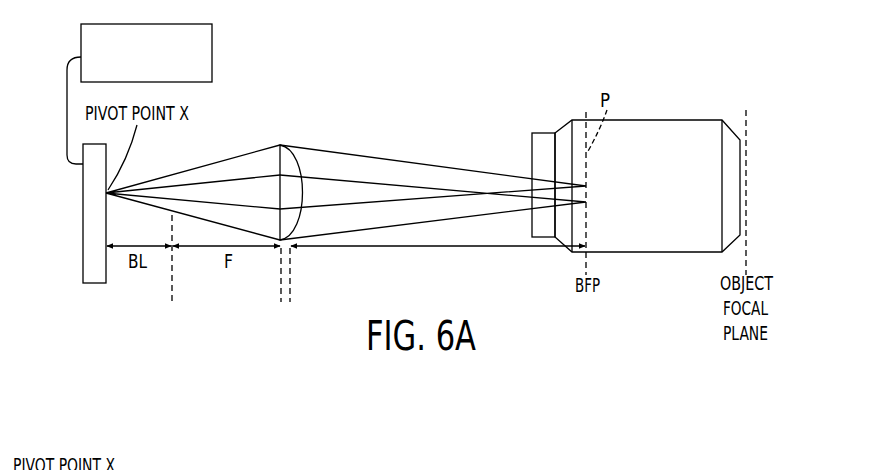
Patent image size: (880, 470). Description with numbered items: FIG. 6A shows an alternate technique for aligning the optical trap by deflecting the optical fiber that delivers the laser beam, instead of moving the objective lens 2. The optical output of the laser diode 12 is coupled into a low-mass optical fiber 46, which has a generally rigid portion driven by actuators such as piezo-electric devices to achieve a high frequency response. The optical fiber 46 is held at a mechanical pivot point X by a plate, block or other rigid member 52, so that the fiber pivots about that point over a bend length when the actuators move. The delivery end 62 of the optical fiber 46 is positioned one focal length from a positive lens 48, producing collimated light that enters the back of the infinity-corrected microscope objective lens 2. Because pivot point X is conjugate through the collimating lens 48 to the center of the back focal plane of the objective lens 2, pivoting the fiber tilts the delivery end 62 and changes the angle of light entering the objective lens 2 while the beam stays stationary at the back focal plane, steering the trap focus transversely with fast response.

The laser diode 12 is at (213, 46).
The optical fiber 46 is at (60, 128).
The rigid member 52 is at (87, 273).
The delivery end 62 is at (177, 175).
The positive lens 48 is at (288, 162).
The objective lens 2 is at (662, 135).